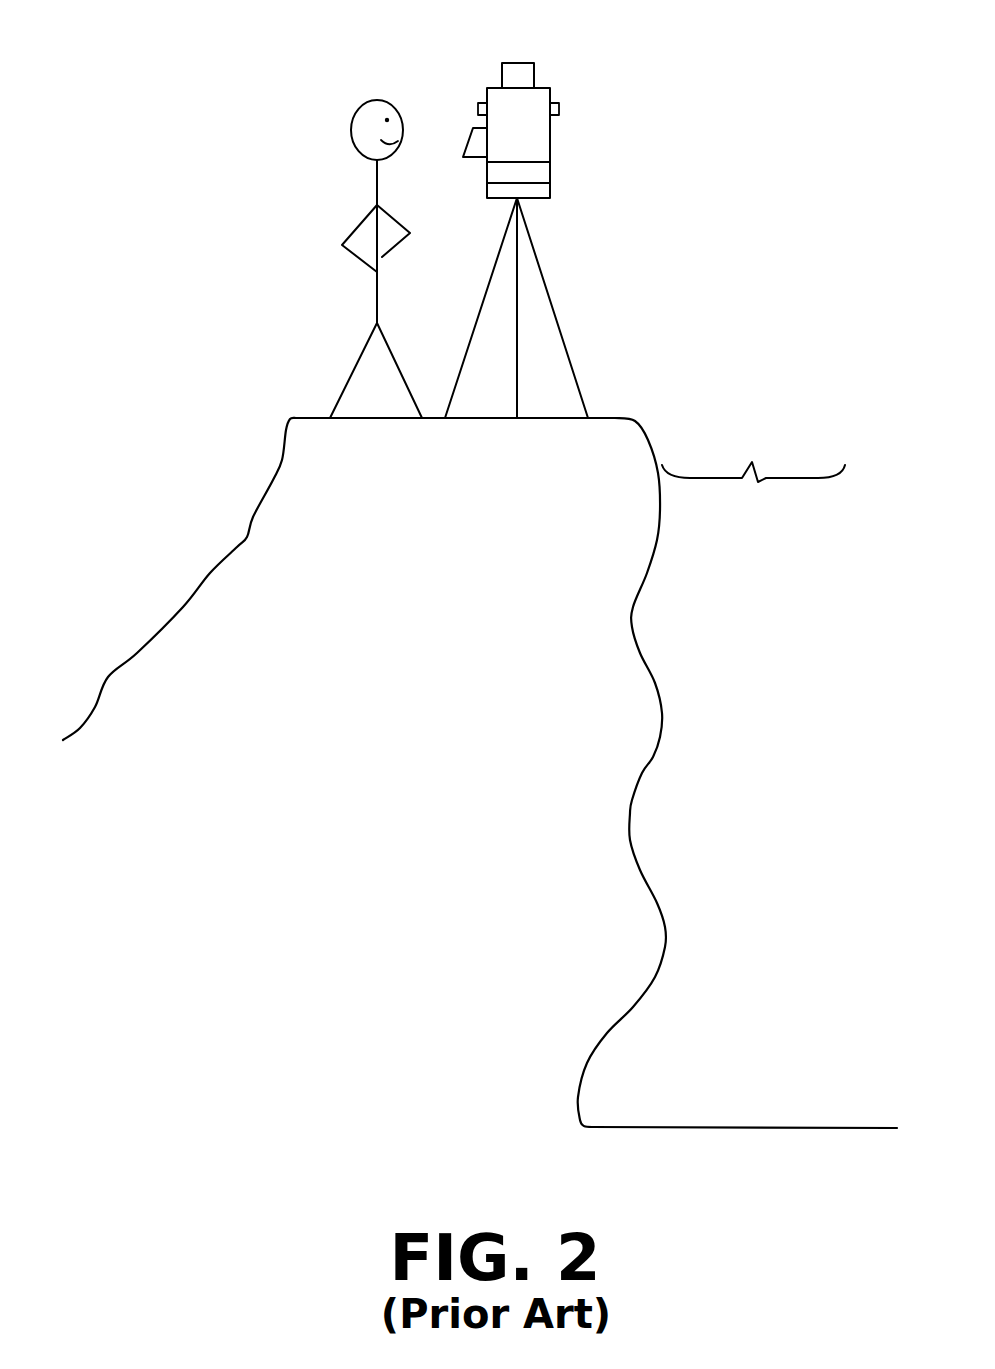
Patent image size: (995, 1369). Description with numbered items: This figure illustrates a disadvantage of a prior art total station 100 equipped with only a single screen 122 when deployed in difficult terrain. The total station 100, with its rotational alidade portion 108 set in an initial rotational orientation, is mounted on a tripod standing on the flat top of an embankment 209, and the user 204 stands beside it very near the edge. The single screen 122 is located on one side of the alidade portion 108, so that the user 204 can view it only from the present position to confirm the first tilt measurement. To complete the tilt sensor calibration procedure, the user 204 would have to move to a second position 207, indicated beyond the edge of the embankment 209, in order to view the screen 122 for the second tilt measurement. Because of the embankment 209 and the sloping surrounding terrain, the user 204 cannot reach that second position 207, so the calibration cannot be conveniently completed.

The total station 100 is at (534, 210).
The rotational alidade portion 108 is at (539, 143).
The screen 122 is at (476, 174).
The user 204 is at (375, 285).
The second position 207 is at (753, 490).
The embankment 209 is at (432, 471).